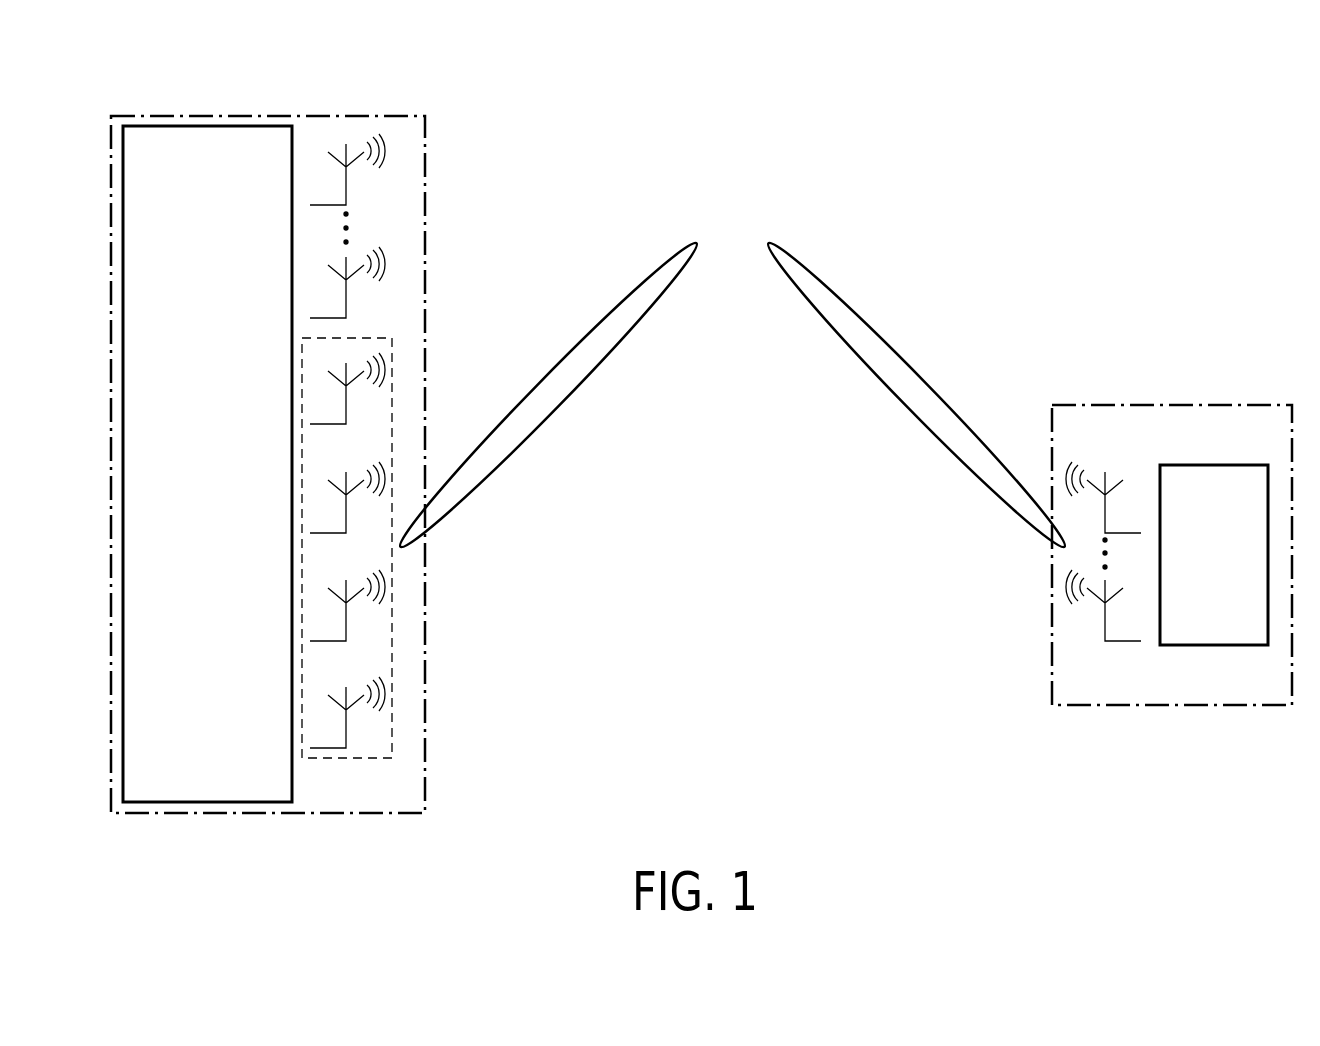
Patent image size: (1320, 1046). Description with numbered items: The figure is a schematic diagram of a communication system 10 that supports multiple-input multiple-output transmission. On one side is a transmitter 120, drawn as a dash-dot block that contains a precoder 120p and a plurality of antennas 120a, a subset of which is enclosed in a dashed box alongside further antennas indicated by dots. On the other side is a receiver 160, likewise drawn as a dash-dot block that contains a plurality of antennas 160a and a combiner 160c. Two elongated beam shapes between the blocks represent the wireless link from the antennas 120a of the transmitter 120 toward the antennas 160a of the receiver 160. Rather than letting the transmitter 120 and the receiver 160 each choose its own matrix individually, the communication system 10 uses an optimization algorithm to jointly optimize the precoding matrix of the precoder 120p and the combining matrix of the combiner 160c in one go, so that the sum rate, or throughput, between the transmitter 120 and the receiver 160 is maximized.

The communication system 10 is at (1064, 80).
The transmitter 120 is at (316, 114).
The precoder 120p is at (238, 478).
The antennas 120a is at (330, 758).
The receiver 160 is at (1169, 403).
The combiner 160c is at (1243, 568).
The antennas 160a is at (1120, 640).